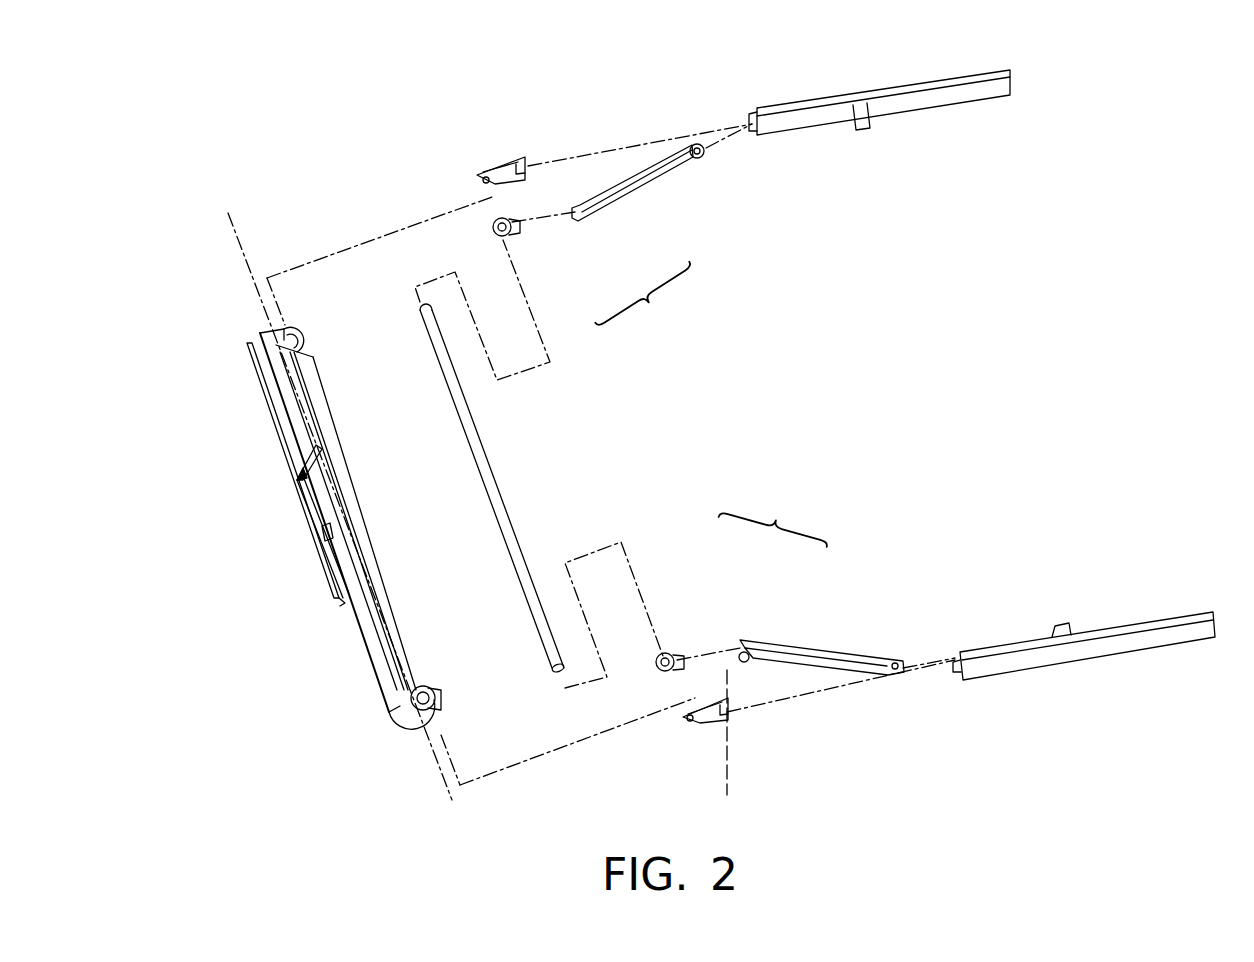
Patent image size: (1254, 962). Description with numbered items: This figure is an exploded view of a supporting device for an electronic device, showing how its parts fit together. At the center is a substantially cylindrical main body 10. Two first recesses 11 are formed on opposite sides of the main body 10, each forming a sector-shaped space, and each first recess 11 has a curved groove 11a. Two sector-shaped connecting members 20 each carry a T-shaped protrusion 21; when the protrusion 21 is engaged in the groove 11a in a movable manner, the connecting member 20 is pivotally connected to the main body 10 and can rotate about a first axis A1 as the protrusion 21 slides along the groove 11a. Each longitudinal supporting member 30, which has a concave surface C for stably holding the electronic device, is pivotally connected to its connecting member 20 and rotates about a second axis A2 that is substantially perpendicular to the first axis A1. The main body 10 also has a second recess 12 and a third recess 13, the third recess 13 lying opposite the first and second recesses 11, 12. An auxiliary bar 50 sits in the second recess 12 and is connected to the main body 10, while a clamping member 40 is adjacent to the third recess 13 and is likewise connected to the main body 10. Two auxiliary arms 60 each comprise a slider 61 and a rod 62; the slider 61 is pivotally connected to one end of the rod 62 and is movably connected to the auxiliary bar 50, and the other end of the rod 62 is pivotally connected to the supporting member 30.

The main body 10 is at (362, 632).
The first recess 11 is at (290, 325).
The curved groove 11a is at (433, 687).
The second recess 12 is at (305, 365).
The third recess 13 is at (278, 378).
The connecting member 20 is at (480, 172).
The T-shaped protrusion 21 is at (518, 163).
The supporting member 30 is at (887, 92).
The clamping member 40 is at (322, 487).
The auxiliary bar 50 is at (463, 427).
The auxiliary arm 60 is at (711, 404).
The slider 61 is at (515, 228).
The rod 62 is at (603, 203).
The first axis A1 is at (438, 770).
The second axis A2 is at (728, 762).
The concave surface C is at (927, 98).